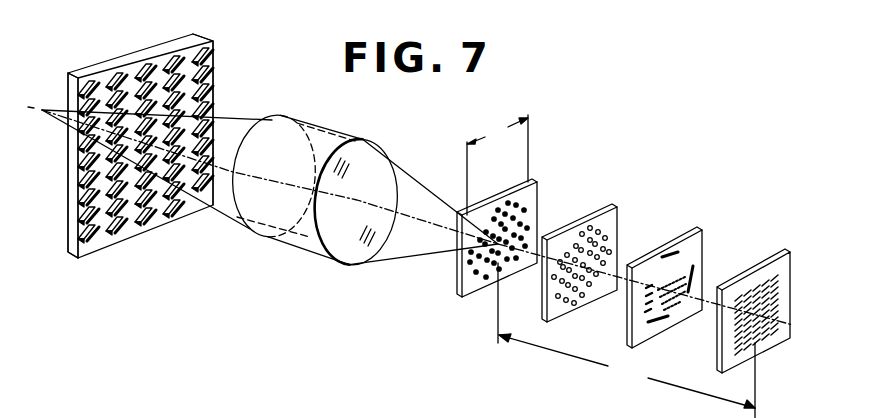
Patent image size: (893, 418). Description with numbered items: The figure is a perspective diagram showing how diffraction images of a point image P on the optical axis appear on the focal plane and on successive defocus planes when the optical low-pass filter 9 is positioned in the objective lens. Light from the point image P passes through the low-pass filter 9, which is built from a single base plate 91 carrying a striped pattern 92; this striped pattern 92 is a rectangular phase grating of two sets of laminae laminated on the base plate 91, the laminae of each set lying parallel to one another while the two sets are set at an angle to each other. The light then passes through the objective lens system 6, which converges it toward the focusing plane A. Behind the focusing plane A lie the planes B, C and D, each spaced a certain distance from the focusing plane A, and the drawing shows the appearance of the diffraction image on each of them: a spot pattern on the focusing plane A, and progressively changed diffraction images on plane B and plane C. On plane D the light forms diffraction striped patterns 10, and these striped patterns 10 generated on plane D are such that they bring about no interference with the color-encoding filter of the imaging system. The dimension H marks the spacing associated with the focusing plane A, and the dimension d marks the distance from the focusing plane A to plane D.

The optical low-pass filter 9 is at (116, 58).
The base plate 91 is at (88, 70).
The striped pattern 92 is at (214, 64).
The point image P is at (42, 110).
The objective lens system 6 is at (322, 131).
The focusing plane A is at (505, 191).
The plane B is at (600, 208).
The plane C is at (678, 231).
The plane D is at (763, 252).
The diffraction striped patterns 10 is at (737, 290).
The distance H is at (497, 165).
The distance d is at (626, 340).